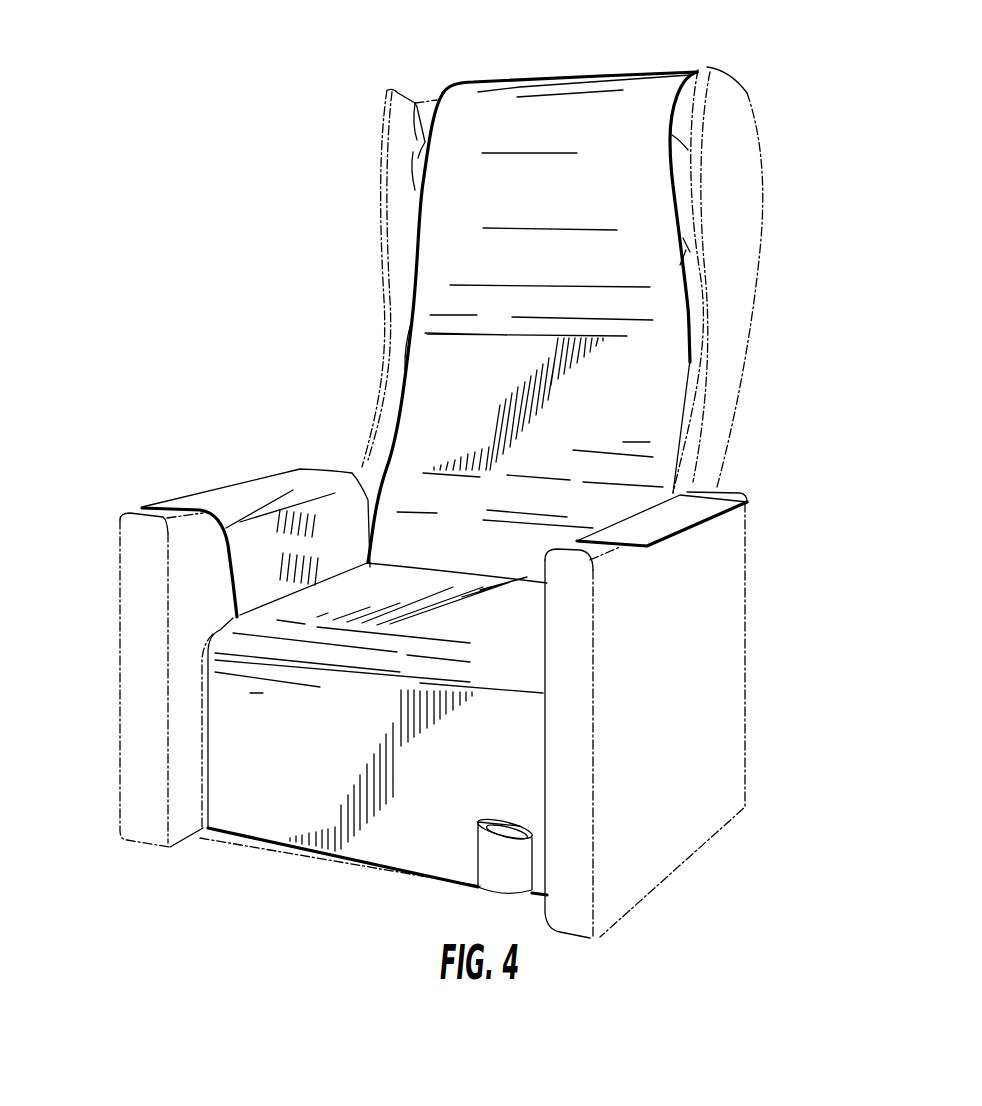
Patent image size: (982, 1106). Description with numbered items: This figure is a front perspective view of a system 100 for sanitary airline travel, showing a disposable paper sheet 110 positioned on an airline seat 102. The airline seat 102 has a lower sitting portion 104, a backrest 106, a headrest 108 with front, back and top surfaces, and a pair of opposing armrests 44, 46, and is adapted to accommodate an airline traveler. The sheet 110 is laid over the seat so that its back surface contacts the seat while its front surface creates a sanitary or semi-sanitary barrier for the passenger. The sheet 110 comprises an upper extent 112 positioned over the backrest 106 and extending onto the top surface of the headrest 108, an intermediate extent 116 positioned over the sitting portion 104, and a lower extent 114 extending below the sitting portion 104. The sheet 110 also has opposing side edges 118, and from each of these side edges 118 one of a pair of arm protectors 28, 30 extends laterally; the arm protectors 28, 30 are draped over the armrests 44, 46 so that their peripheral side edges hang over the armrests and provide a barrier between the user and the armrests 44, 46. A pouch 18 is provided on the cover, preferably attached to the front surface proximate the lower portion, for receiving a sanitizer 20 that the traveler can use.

The system for sanitary airline travel 100 is at (246, 94).
The airline seat 102 is at (716, 715).
The lower sitting portion 104 is at (127, 680).
The backrest 106 is at (335, 278).
The headrest 108 is at (369, 152).
The disposable paper sheet 110 is at (587, 319).
The upper extent 112 is at (678, 115).
The lower extent 114 is at (373, 765).
The intermediate extent 116 is at (521, 631).
The side edges 118 is at (314, 367).
The arm protector 28 is at (244, 535).
The arm protector 30 is at (696, 485).
The armrest 44 is at (95, 523).
The armrest 46 is at (705, 545).
The pouch 18 is at (598, 872).
The sanitizer 20 is at (646, 803).